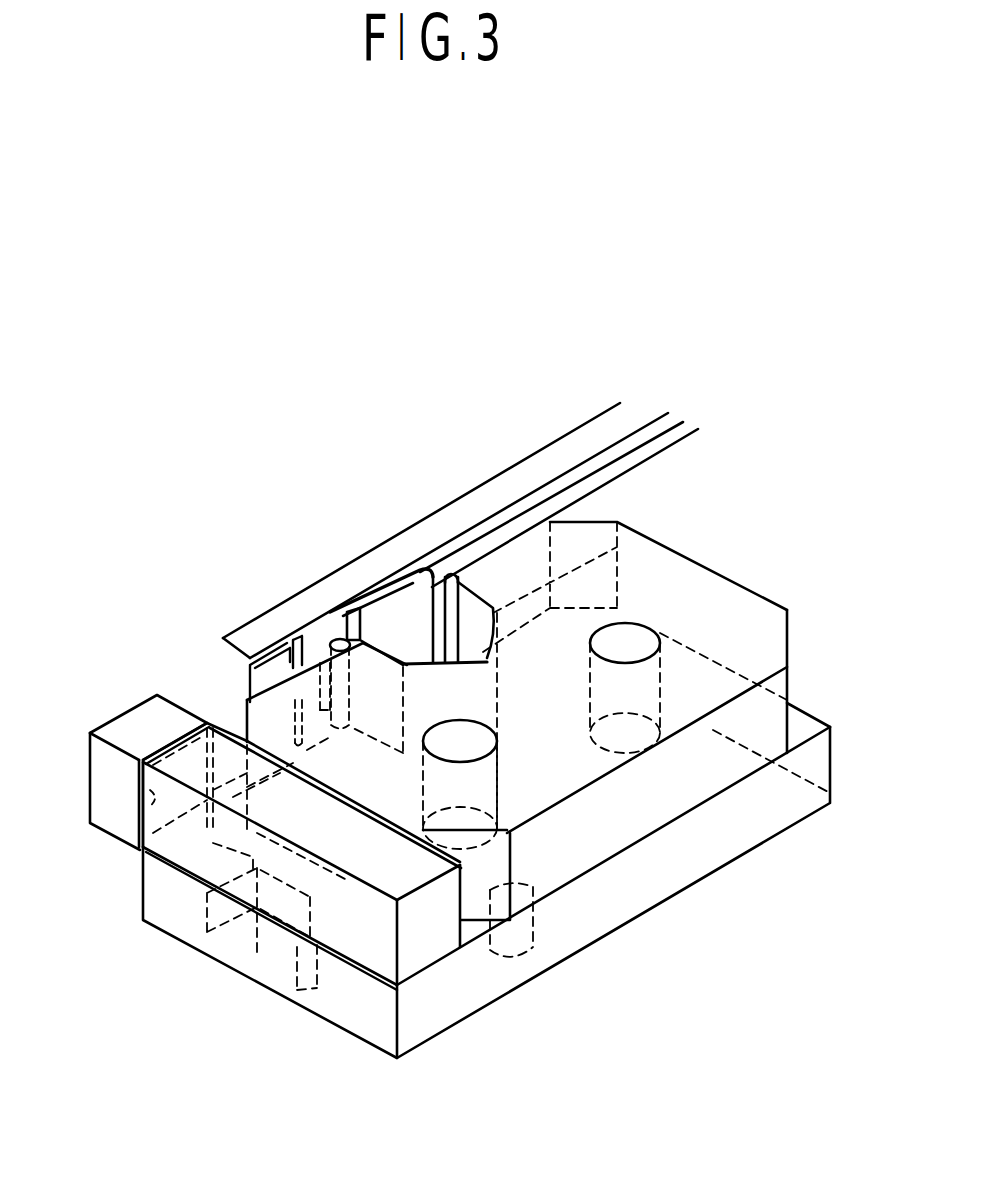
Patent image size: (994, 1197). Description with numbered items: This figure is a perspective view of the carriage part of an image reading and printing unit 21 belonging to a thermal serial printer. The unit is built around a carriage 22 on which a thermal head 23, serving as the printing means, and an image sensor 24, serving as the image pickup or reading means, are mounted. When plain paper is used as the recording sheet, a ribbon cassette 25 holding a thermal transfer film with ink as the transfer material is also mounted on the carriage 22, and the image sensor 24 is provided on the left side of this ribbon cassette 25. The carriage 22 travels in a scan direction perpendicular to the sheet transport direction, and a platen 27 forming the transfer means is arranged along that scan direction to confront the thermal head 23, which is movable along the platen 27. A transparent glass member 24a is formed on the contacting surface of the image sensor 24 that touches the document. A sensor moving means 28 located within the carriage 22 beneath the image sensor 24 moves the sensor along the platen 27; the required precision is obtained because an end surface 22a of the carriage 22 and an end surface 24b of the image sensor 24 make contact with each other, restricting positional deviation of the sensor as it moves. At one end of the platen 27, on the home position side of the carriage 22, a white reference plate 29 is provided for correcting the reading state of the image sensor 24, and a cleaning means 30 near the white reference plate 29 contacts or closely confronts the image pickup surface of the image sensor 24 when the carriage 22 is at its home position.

The image reading and printing unit 21 is at (390, 346).
The carriage 22 is at (670, 903).
The end surface of the carriage 22a is at (213, 893).
The thermal head 23 is at (398, 606).
The image sensor 24 is at (203, 863).
The transparent glass member 24a is at (140, 808).
The end surface of the image sensor 24b is at (243, 882).
The ribbon cassette 25 is at (737, 600).
The platen 27 is at (660, 512).
The sensor moving means 28 is at (490, 978).
The white reference plate 29 is at (243, 672).
The cleaning means 30 is at (140, 700).